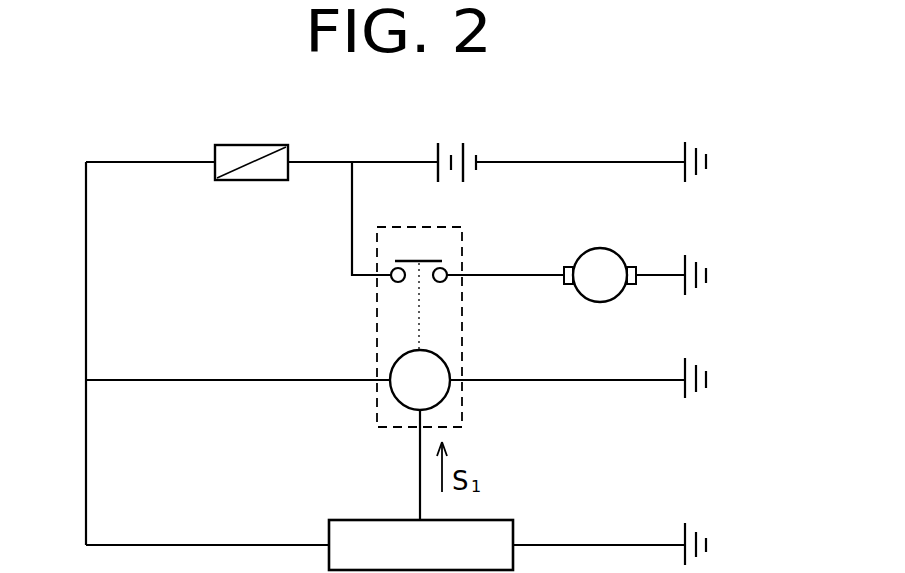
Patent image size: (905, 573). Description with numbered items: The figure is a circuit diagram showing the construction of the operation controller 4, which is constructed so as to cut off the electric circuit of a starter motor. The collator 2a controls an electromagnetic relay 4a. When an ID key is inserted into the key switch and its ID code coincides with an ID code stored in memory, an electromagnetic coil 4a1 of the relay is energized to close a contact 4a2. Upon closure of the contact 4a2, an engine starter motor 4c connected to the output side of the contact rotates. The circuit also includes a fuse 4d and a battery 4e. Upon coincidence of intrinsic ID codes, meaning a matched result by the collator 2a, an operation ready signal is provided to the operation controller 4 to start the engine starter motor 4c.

The operation controller 4 is at (602, 129).
The fuse 4d is at (250, 145).
The battery 4e is at (463, 149).
The electromagnetic relay 4a is at (463, 320).
The electromagnetic coil 4a1 is at (445, 397).
The contact 4a2 is at (432, 260).
The engine starter motor 4c is at (600, 249).
The collator 2a is at (495, 520).